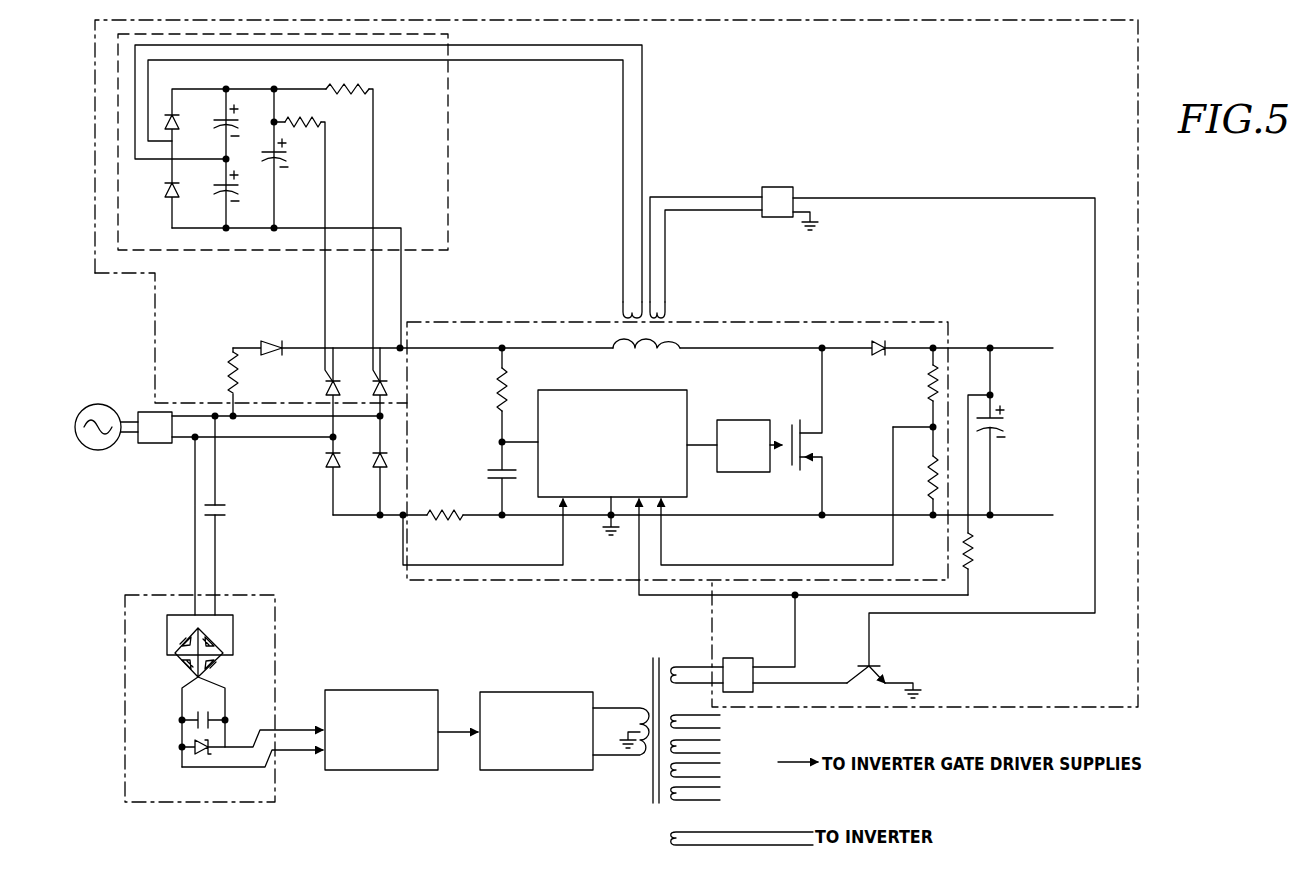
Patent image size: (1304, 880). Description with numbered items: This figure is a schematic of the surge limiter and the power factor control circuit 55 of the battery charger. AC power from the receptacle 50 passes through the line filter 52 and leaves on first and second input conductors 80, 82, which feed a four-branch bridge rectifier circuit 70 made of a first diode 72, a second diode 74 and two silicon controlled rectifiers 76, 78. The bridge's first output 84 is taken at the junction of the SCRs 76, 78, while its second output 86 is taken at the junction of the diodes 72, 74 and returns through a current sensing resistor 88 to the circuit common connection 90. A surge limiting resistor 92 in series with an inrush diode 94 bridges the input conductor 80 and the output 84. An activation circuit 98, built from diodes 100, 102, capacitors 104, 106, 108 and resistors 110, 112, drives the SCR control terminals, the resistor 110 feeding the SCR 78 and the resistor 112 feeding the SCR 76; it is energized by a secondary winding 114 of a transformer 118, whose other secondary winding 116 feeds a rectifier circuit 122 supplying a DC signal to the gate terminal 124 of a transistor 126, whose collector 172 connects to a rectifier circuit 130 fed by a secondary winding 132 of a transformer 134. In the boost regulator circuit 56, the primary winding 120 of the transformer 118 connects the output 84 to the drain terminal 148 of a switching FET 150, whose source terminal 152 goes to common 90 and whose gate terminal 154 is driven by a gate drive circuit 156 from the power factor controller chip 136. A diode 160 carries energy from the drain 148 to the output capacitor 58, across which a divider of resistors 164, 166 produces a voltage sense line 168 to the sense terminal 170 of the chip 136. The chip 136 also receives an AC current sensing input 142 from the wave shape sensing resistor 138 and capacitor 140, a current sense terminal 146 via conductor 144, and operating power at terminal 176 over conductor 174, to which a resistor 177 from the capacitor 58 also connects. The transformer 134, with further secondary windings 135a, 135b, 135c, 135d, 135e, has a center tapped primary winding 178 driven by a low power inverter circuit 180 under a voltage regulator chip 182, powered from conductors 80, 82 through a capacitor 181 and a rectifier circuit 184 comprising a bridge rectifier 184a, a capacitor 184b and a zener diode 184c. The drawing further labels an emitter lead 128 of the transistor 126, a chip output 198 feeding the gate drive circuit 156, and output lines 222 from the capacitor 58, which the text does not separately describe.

The AC receptacle 50 is at (92, 405).
The line filter 52 is at (147, 444).
The power factor control circuit 55 is at (1138, 684).
The boost regulator circuit 56 is at (420, 582).
The output capacitor 58 is at (993, 395).
The bridge rectifier circuit 70 is at (332, 431).
The first diode 72 is at (372, 458).
The second diode 74 is at (325, 456).
The silicon controlled rectifier 76 is at (376, 388).
The silicon controlled rectifier 78 is at (325, 388).
The first input conductor 80 is at (188, 412).
The second input conductor 82 is at (185, 442).
The first output 84 is at (386, 346).
The second output 86 is at (358, 518).
The current sensing resistor 88 is at (444, 510).
The circuit common connection 90 is at (608, 526).
The surge limiting resistor 92 is at (230, 376).
The inrush rectifier diode 94 is at (267, 340).
The activation circuit 98 is at (448, 126).
The diode 100 is at (168, 185).
The diode 102 is at (178, 121).
The capacitor 104 is at (218, 196).
The capacitor 106 is at (220, 130).
The capacitor 108 is at (286, 158).
The resistor 110 is at (314, 121).
The resistor 112 is at (366, 86).
The secondary winding 114 is at (623, 252).
The secondary winding 116 is at (665, 270).
The transformer 118 is at (611, 318).
The primary winding 120 is at (613, 352).
The rectifier circuit 122 is at (778, 187).
The gate terminal 124 is at (864, 663).
The transistor 126 is at (884, 667).
The transistor 128 is at (888, 686).
The rectifier circuit 130 is at (738, 658).
The secondary winding 132 is at (692, 666).
The transformer 134 is at (640, 670).
The secondary winding 135a is at (710, 728).
The secondary winding 135b is at (710, 753).
The secondary winding 135c is at (710, 776).
The secondary winding 135d is at (710, 800).
The secondary winding 135e is at (735, 832).
The power factor controller chip 136 is at (674, 390).
The resistor 138 is at (498, 378).
The capacitor 140 is at (490, 468).
The AC current sensing input terminal 142 is at (535, 440).
The conductor 144 is at (512, 565).
The current sense terminal 146 is at (558, 503).
The drain terminal 148 is at (818, 431).
The switching field effect transistor 150 is at (822, 431).
The source terminal 152 is at (822, 458).
The gate terminal 154 is at (788, 440).
The gate drive circuit 156 is at (745, 472).
The diode 160 is at (870, 352).
The resistor 164 is at (928, 398).
The resistor 166 is at (928, 492).
The voltage sense line 168 is at (920, 426).
The voltage sense terminal 170 is at (675, 507).
The collector 172 is at (845, 680).
The conductor 174 is at (672, 597).
The input power supply terminal 176 is at (655, 520).
The resistor 177 is at (974, 550).
The center tapped primary winding 178 is at (638, 706).
The low power inverter circuit 180 is at (532, 692).
The capacitor 181 is at (226, 514).
The voltage regulator chip 182 is at (376, 690).
The rectifier circuit 184 is at (195, 698).
The bridge rectifier 184a is at (214, 662).
The capacitor 184b is at (210, 716).
The zener diode 184c is at (178, 750).
The chip output 198 is at (693, 442).
The DC output terminals 222 is at (1028, 348).